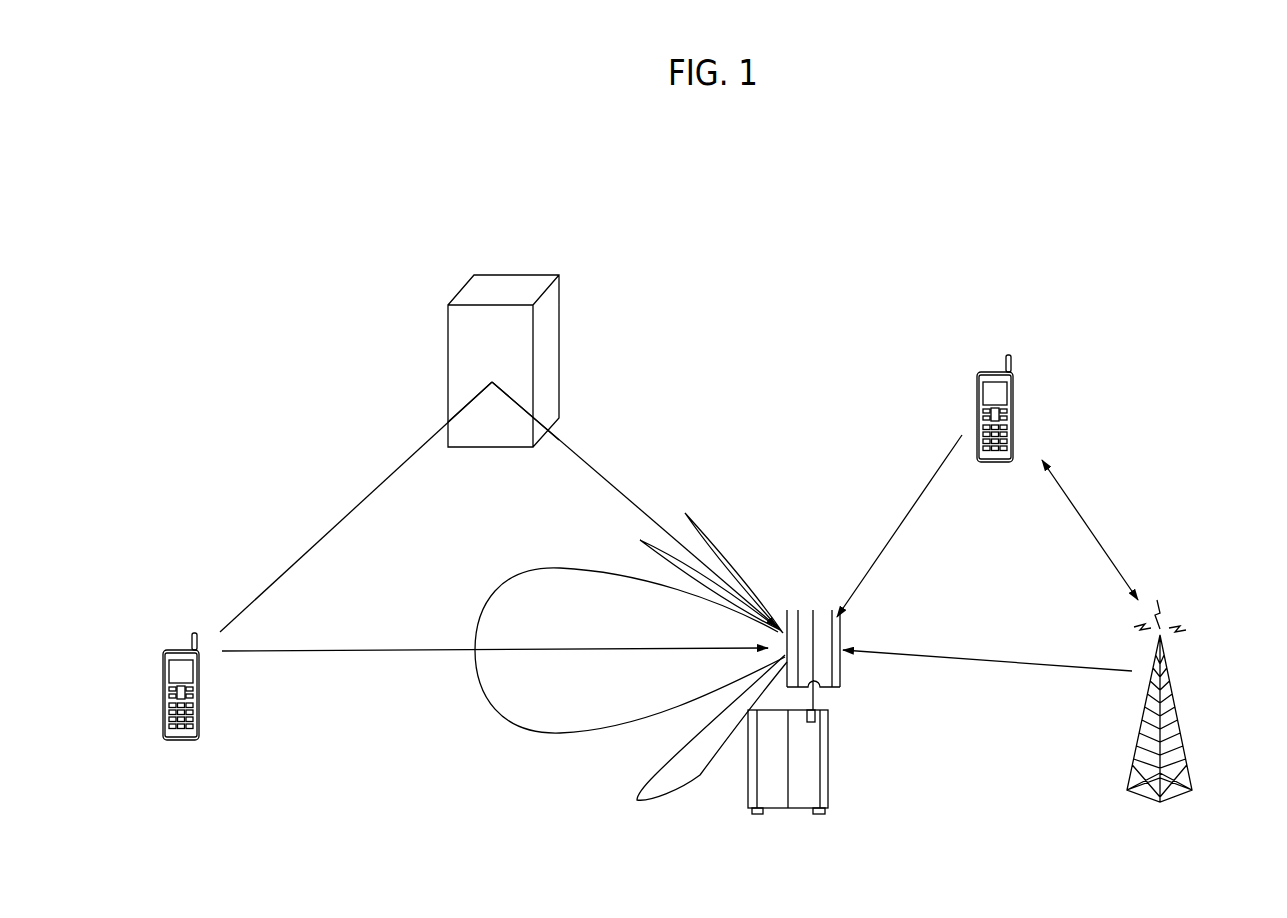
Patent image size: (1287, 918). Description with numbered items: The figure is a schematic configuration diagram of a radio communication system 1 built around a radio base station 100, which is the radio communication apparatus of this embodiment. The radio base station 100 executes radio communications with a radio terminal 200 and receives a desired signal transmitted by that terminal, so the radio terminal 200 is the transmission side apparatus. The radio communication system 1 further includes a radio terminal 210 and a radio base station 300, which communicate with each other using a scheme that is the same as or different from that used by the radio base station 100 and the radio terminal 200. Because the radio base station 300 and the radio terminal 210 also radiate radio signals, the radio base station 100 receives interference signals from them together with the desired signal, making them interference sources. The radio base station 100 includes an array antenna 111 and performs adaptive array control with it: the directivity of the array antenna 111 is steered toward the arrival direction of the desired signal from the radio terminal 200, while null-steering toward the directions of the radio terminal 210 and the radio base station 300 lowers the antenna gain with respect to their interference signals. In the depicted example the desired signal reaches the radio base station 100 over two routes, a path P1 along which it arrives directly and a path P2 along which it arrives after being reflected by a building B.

The radio communication system 1 is at (963, 210).
The building B is at (512, 285).
The path P1 is at (380, 652).
The path P2 is at (365, 503).
The radio base station 100 is at (802, 810).
The array antenna 111 is at (843, 675).
The radio terminal 200 is at (200, 694).
The radio terminal 210 is at (1014, 414).
The radio base station 300 is at (1176, 700).